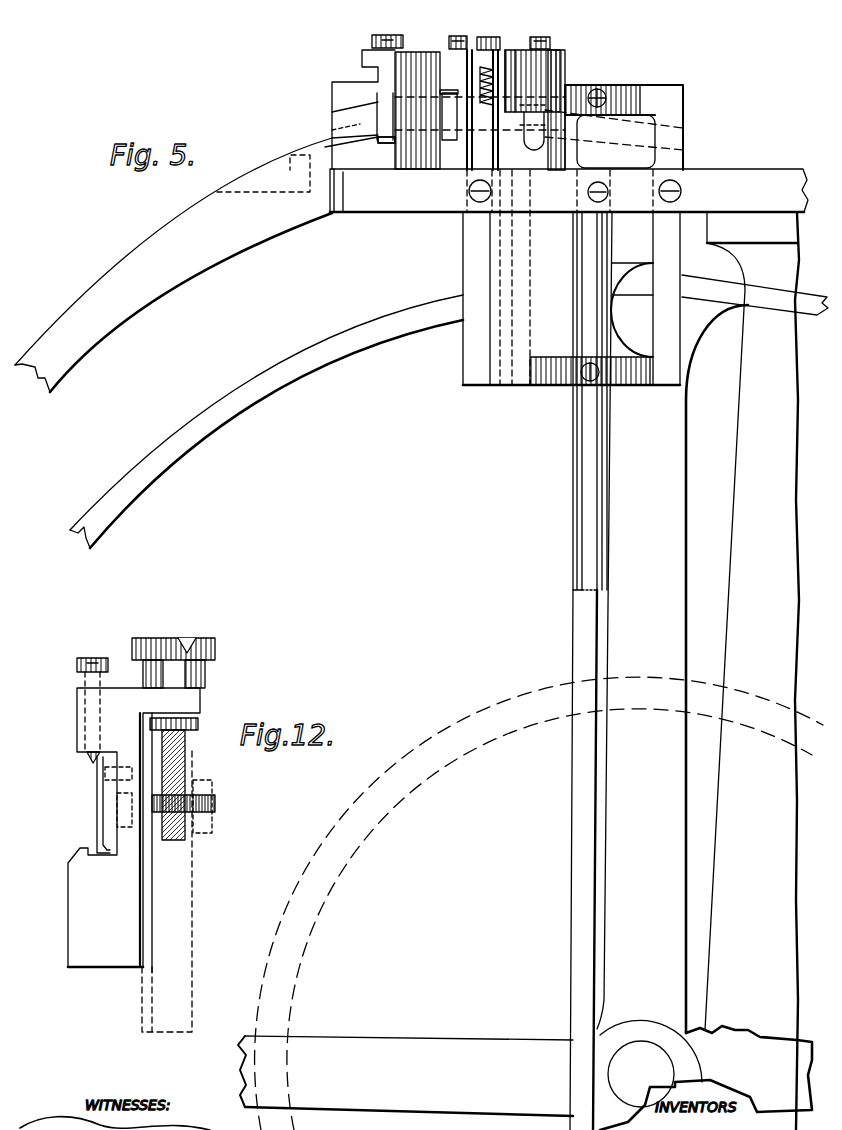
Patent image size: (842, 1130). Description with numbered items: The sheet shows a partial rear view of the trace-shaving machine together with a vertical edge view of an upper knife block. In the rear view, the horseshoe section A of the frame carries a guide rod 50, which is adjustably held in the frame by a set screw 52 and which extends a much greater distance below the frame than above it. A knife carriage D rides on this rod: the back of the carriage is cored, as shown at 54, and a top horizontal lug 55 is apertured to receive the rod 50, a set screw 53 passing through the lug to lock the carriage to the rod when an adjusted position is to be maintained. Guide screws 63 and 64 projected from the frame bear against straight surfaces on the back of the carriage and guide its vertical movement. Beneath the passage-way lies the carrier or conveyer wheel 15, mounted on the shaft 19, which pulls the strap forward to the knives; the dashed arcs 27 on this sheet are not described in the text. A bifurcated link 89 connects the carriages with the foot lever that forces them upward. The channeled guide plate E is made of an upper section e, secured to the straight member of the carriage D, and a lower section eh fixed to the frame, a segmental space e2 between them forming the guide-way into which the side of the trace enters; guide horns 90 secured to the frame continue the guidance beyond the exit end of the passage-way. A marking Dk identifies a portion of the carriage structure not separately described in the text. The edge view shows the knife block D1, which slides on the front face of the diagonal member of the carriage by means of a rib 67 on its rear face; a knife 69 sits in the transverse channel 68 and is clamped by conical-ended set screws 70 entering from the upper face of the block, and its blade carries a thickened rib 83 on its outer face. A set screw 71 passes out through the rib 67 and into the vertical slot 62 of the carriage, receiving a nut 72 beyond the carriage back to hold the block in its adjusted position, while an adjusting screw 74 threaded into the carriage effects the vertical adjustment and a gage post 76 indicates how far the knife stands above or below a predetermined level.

In FIG. 5, the carrier or conveyer wheel 15 is at (273, 363).
In FIG. 5, the shaft 19 is at (706, 1075).
In FIG. 5, the path of movement 27 is at (539, 903).
In FIG. 5, the guide rod 50 is at (576, 247).
In FIG. 5, the set screw 52 is at (608, 196).
In FIG. 5, the set screw 53 is at (600, 89).
In FIG. 5, the cored back of carriage 54 is at (558, 300).
In FIG. 5, the top horizontal lug 55 is at (632, 83).
In FIG. 5, the vertical slot 62 is at (521, 141).
In FIG. 5, the guide screw 63 is at (681, 190).
In FIG. 5, the guide screw 64 is at (469, 191).
In FIG. 5, the rib 67 is at (538, 52).
In FIG. 12, the rib 67 is at (150, 892).
In FIG. 12, the transverse channel 68 is at (113, 752).
In FIG. 5, the knife 69 is at (455, 85).
In FIG. 12, the knife 69 is at (97, 803).
In FIG. 5, the set screw 70 is at (405, 50).
In FIG. 12, the set screw 70 is at (85, 681).
In FIG. 5, the set screw 71 is at (522, 126).
In FIG. 12, the set screw 71 is at (228, 806).
In FIG. 5, the nut 72 is at (580, 160).
In FIG. 5, the adjusting screw 74 is at (372, 42).
In FIG. 12, the adjusting screw 74 is at (208, 640).
In FIG. 12, the gage post 76 is at (170, 674).
In FIG. 12, the rib 83 is at (108, 853).
In FIG. 5, the bifurcated link 89 is at (590, 638).
In FIG. 5, the guide horn 90 is at (196, 263).
In FIG. 5, the horseshoe section A is at (569, 190).
In FIG. 5, the knife carriage D is at (560, 72).
In FIG. 12, the knife carriage D is at (222, 900).
In FIG. 12, the knife block D1 is at (78, 885).
In FIG. 5, the block Dk is at (448, 44).
In FIG. 5, the channeled plate E is at (312, 137).
In FIG. 5, the upper section e is at (368, 113).
In FIG. 5, the lower section eh is at (349, 126).
In FIG. 5, the space e2 is at (675, 140).